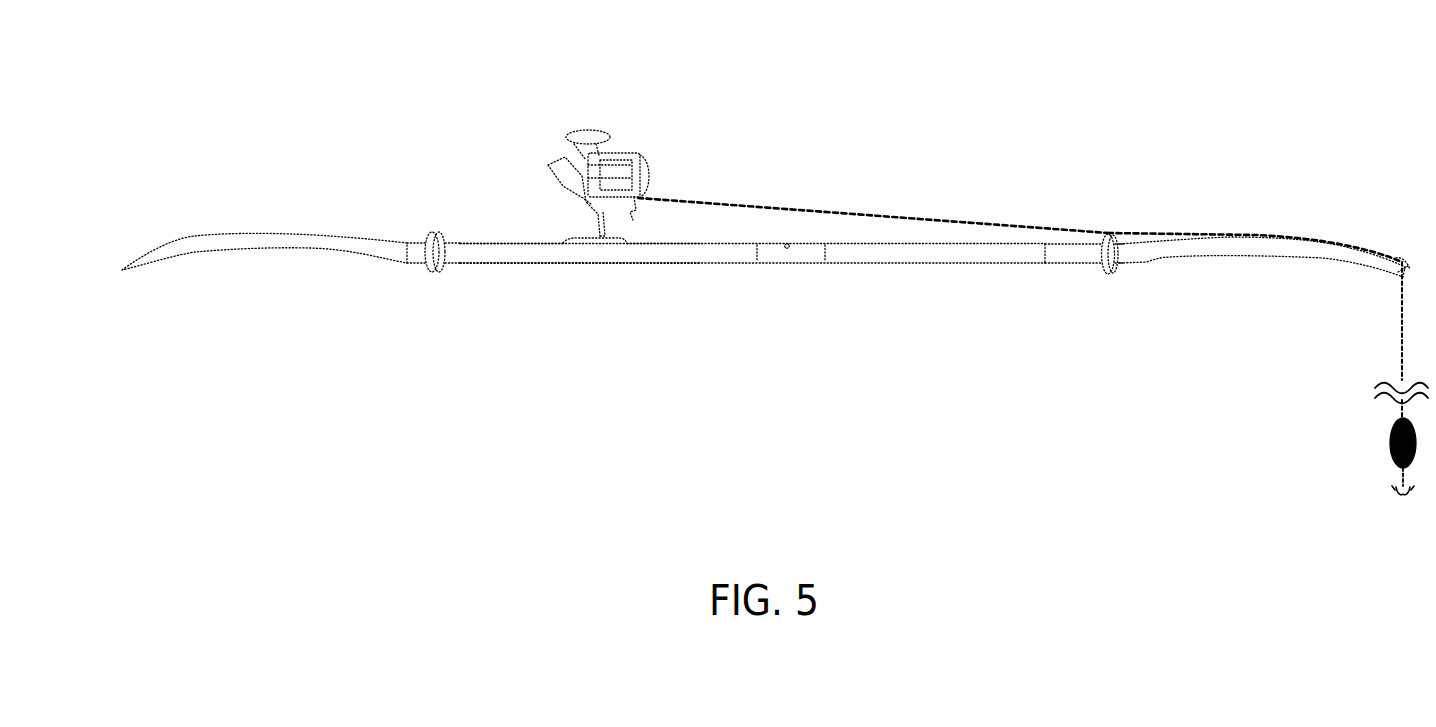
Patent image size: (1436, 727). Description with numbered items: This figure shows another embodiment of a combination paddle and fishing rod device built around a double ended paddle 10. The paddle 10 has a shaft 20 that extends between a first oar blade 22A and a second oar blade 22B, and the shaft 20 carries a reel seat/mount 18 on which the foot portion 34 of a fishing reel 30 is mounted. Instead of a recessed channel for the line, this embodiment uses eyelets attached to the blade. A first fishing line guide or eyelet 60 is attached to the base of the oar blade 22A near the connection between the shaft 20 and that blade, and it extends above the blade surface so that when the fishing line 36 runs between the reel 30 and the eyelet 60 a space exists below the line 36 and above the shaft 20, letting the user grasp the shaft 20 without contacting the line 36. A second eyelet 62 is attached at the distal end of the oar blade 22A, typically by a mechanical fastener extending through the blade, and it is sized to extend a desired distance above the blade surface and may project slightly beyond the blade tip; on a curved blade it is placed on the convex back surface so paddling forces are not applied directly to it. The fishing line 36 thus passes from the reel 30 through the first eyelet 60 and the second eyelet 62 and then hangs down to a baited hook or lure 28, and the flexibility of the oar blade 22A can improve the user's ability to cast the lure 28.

The double ended paddle 10 is at (863, 284).
The reel seat/mount 18 is at (565, 242).
The shaft 20 is at (708, 263).
The first oar blade 22A is at (1223, 245).
The second oar blade 22B is at (205, 243).
The lure 28 is at (1390, 437).
The fishing reel 30 is at (570, 170).
The foot portion 34 is at (597, 240).
The fishing line 36 is at (770, 207).
The first fishing line guide or eyelet 60 is at (1108, 233).
The second eyelet 62 is at (1402, 260).